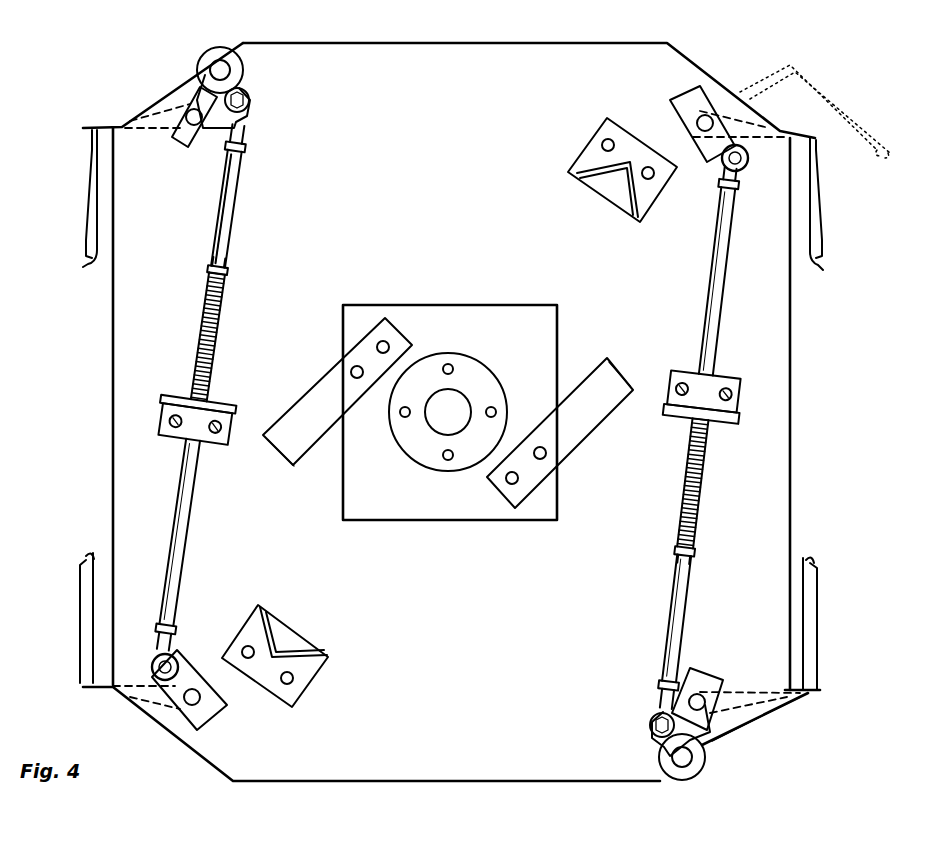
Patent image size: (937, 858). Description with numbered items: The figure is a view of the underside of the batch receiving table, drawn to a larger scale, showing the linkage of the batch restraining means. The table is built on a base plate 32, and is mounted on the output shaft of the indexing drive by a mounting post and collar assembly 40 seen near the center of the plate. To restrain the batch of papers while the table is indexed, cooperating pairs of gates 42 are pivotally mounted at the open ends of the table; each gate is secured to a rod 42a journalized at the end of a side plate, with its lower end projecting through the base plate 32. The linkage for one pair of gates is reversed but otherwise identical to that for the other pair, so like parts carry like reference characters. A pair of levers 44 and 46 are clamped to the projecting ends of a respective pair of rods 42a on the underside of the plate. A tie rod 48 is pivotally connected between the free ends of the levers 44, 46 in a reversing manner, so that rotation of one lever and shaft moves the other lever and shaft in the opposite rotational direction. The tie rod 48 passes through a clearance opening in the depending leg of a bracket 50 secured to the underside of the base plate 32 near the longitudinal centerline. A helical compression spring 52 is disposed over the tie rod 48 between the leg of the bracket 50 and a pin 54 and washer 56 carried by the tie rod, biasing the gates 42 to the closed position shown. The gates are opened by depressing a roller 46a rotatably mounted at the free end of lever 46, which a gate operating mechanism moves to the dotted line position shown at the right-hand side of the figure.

The base plate 32 is at (529, 62).
The mounting post and collar assembly 40 is at (487, 375).
The gates 42 is at (92, 206).
The rods 42a is at (185, 112).
The lever 44 is at (180, 662).
The lever 46 is at (195, 90).
The roller 46a is at (199, 56).
The tie rod 48 is at (192, 530).
The bracket 50 is at (165, 445).
The helical compression spring 52 is at (196, 340).
The pin 54 is at (210, 263).
The washer 56 is at (208, 272).